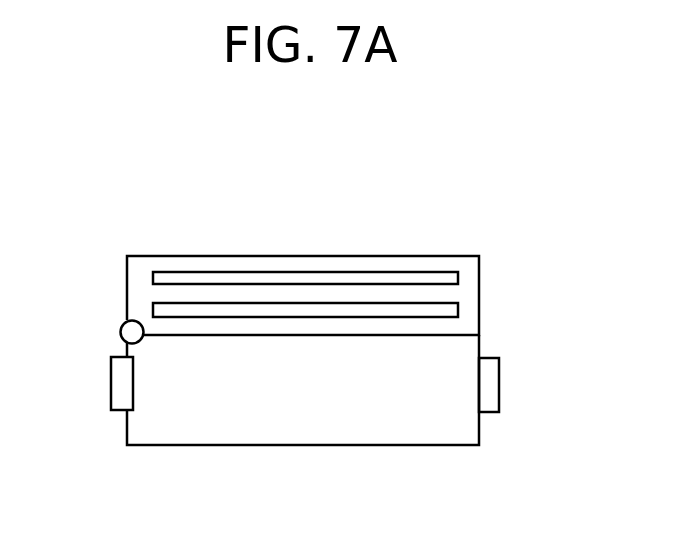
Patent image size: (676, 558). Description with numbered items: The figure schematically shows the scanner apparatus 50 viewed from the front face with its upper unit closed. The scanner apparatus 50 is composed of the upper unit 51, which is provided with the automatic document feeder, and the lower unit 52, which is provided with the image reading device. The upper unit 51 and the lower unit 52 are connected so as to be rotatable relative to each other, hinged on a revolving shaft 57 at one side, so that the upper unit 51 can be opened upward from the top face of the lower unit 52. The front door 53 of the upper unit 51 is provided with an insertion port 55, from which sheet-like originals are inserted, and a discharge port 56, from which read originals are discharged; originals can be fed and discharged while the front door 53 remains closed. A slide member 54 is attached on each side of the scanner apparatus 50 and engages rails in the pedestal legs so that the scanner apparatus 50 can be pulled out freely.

The scanner apparatus 50 is at (487, 202).
The upper unit 51 is at (308, 254).
The lower unit 52 is at (301, 451).
The front door 53 is at (435, 263).
The slide member 54 is at (112, 388).
The insertion port 55 is at (230, 270).
The discharge port 56 is at (390, 303).
The revolving shaft 57 is at (127, 332).